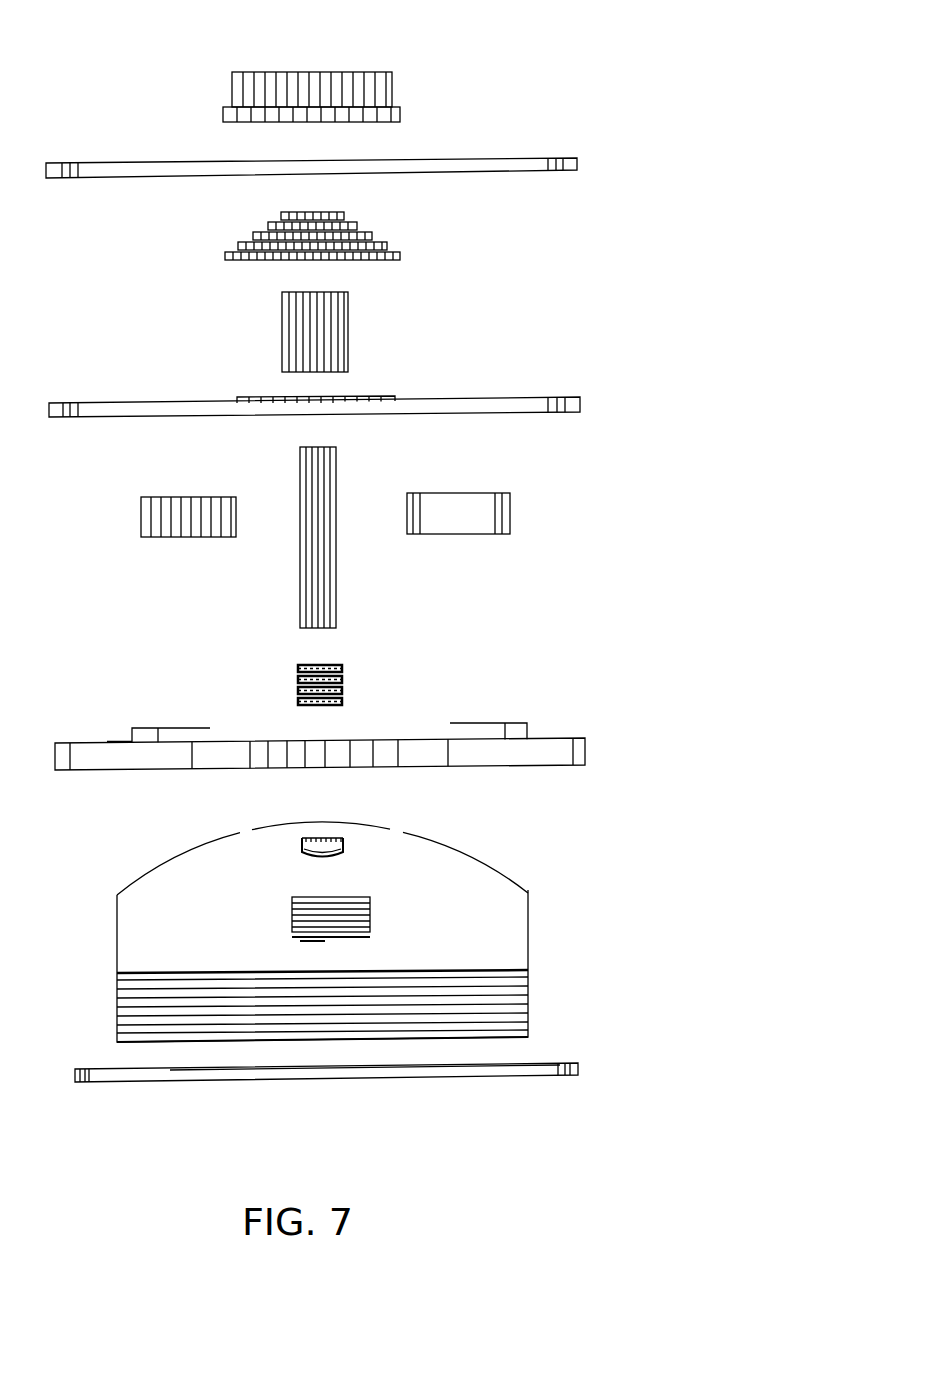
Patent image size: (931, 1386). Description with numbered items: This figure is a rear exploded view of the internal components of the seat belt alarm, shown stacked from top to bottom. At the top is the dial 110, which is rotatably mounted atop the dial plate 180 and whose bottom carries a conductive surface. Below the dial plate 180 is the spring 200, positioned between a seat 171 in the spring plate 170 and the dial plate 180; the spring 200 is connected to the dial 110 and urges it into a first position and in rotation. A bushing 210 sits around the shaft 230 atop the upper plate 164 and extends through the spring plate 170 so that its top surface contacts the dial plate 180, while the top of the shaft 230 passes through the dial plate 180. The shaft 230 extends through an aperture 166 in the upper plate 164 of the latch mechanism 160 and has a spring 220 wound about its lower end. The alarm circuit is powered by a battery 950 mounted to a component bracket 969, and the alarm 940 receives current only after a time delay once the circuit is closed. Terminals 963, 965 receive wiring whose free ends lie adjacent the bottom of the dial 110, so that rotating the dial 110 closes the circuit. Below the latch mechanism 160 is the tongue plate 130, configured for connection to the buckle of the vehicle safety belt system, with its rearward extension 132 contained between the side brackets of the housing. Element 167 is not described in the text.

The dial 110 is at (393, 85).
The dial plate 180 is at (563, 155).
The spring 200 is at (382, 240).
The bushing 210 is at (352, 323).
The spring plate 170 is at (585, 393).
The seat 171 is at (400, 393).
The battery 950 is at (178, 492).
The shaft 230 is at (339, 597).
The alarm 940 is at (508, 493).
The spring 220 is at (345, 662).
The component bracket 969 is at (590, 746).
The terminal 963 is at (177, 727).
The terminal 965 is at (475, 720).
The latch mechanism 160 is at (438, 909).
The upper plate 164 is at (498, 890).
The aperture 166 is at (337, 838).
The grille 167 is at (372, 908).
The tongue plate 130 is at (585, 1067).
The rearward extension 132 is at (170, 1072).